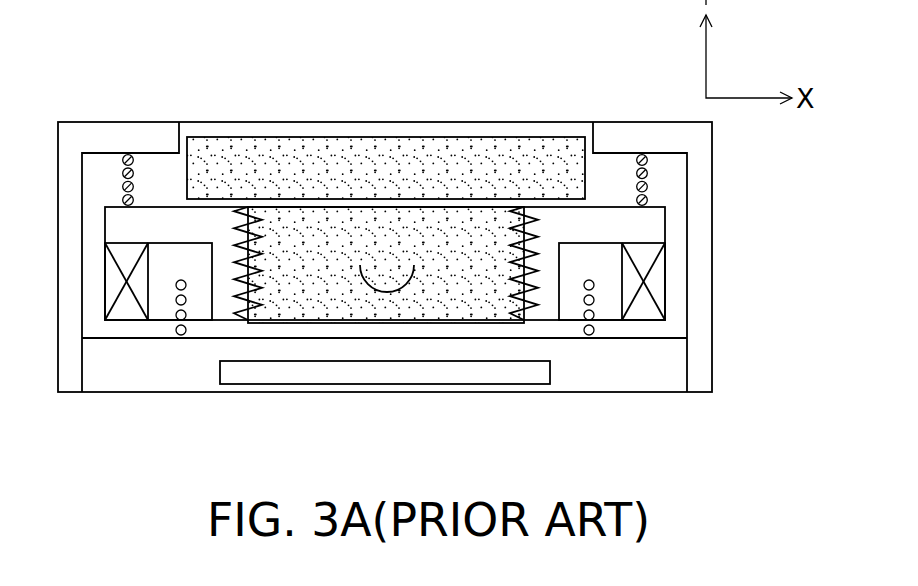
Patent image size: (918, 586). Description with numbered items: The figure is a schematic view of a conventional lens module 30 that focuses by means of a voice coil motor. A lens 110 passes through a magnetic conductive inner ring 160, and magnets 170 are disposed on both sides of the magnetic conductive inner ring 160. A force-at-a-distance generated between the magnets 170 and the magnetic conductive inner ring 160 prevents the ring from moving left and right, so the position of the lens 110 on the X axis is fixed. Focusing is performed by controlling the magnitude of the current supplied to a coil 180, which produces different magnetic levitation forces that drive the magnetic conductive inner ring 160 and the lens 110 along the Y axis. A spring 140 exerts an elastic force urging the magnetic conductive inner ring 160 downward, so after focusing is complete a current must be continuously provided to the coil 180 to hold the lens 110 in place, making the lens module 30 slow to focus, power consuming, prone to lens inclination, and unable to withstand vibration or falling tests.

The lens module 30 is at (580, 459).
The lens 110 is at (450, 155).
The spring 140 is at (656, 182).
The magnetic conductive inner ring 160 is at (647, 222).
The magnets 170 is at (656, 282).
The coil 180 is at (603, 327).